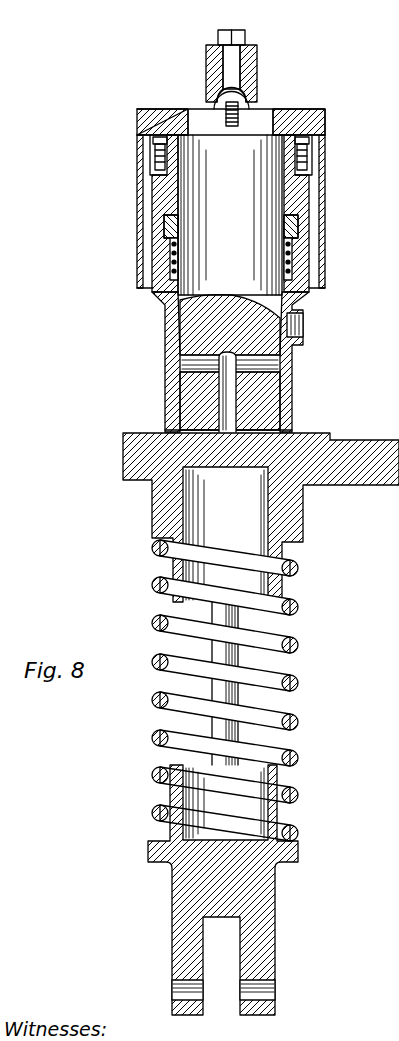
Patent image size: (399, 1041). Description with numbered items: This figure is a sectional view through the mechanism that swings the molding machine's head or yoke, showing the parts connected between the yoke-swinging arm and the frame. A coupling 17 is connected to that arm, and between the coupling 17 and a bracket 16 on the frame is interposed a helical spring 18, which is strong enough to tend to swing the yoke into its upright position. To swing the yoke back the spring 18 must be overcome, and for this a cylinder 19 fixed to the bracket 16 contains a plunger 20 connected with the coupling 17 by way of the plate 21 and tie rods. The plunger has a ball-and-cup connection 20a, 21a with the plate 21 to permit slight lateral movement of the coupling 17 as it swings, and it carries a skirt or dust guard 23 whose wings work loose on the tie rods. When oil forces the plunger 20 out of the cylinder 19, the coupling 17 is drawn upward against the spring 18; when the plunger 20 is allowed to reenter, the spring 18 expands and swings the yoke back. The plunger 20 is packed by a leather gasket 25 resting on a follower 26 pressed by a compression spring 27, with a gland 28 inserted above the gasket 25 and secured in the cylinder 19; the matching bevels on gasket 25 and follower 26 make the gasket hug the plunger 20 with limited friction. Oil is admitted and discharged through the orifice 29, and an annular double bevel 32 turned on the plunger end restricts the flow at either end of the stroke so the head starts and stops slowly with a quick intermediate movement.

The bracket 16 is at (390, 480).
The coupling 17 is at (267, 903).
The helical spring 18 is at (300, 688).
The cylinder 19 is at (170, 327).
The plunger 20 is at (230, 245).
The ball of ball-and-cup connection 20a is at (211, 105).
The plate 21 is at (258, 84).
The cup of ball-and-cup connection 21a is at (206, 77).
The skirt or dust guard 23 is at (323, 247).
The gasket 25 is at (157, 213).
The follower 26 is at (180, 237).
The compression spring 27 is at (290, 276).
The gland 28 is at (293, 197).
The orifice 29 is at (303, 329).
The annular double cone or double bevel 32 is at (275, 372).